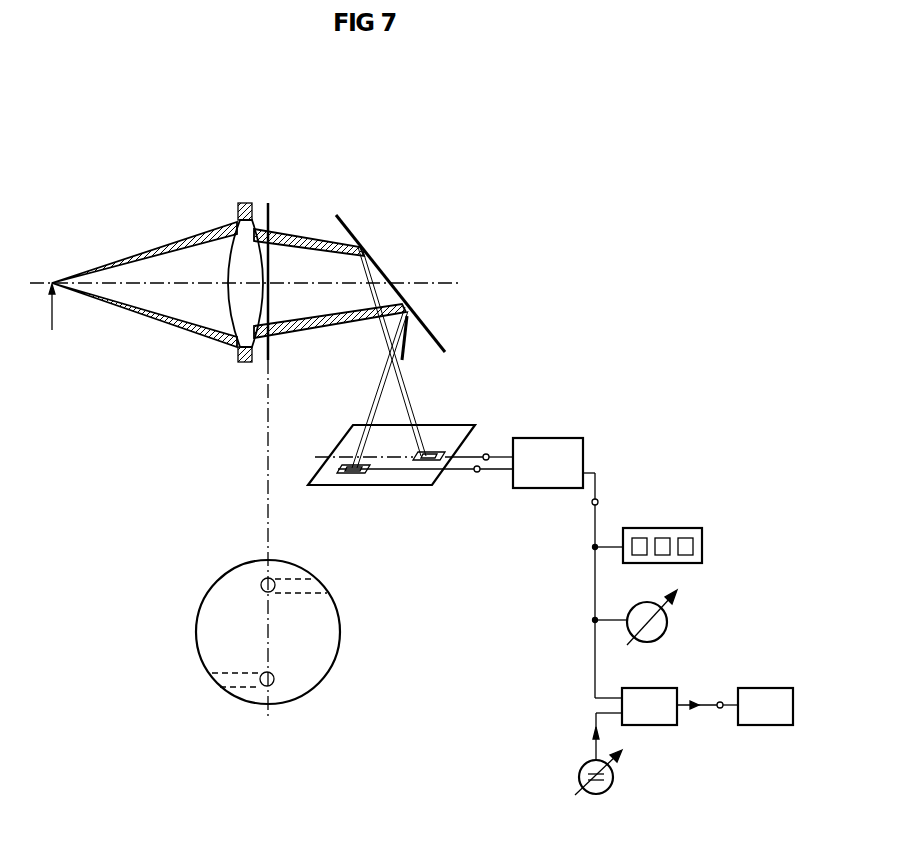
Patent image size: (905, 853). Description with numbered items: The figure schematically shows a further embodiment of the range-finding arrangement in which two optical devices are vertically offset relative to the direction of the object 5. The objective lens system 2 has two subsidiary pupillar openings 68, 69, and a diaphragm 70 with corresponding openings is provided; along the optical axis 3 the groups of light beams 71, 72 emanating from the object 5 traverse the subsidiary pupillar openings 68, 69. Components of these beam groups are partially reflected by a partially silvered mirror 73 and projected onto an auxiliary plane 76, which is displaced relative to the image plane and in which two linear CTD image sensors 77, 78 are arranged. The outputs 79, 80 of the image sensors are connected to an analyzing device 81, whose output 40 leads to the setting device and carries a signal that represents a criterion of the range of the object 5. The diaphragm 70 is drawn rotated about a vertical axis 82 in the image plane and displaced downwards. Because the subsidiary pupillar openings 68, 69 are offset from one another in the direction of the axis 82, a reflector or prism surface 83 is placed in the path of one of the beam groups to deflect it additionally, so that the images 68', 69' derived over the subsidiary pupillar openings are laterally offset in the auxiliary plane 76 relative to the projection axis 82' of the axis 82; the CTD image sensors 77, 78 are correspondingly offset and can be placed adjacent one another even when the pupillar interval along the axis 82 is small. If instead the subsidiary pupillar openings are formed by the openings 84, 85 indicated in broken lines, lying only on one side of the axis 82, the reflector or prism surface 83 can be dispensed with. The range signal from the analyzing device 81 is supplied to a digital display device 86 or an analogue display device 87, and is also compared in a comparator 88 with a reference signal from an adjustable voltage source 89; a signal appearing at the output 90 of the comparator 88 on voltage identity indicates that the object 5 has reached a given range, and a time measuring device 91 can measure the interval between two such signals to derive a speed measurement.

The objective lens system 2 is at (240, 357).
The optical axis 3 is at (180, 287).
The object 5 is at (53, 313).
The output 40 is at (607, 585).
The subsidiary pupillar opening 68 is at (330, 518).
The subsidiary pupillar opening 69 is at (293, 388).
The diaphragm 70 is at (270, 303).
The group of light beams 71 is at (140, 313).
The group of light beams 72 is at (178, 247).
The partially silvered mirror 73 is at (353, 230).
The auxiliary plane 76 is at (403, 478).
The linear CTD image sensor 77 is at (363, 473).
The linear CTD image sensor 78 is at (427, 450).
The output 79 is at (425, 486).
The output 80 is at (479, 443).
The analyzing device 81 is at (552, 437).
The vertical axis 82 is at (246, 538).
The projection axis 82' is at (359, 438).
The reflector or prism surface 83 is at (403, 358).
The opening 84 is at (237, 670).
The opening 85 is at (305, 595).
The digital display device 86 is at (703, 543).
The analogue display device 87 is at (668, 618).
The comparator 88 is at (637, 725).
The voltage source 89 is at (615, 775).
The output 90 is at (707, 698).
The time measuring device 91 is at (755, 727).
The image 68' is at (325, 494).
The image 69' is at (452, 493).